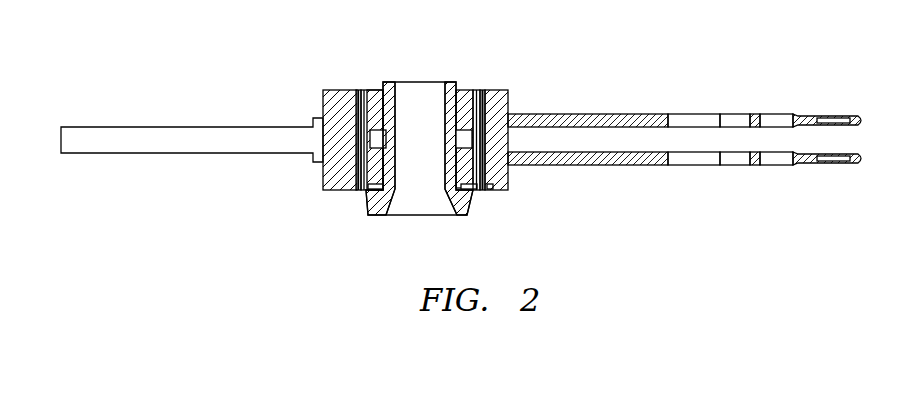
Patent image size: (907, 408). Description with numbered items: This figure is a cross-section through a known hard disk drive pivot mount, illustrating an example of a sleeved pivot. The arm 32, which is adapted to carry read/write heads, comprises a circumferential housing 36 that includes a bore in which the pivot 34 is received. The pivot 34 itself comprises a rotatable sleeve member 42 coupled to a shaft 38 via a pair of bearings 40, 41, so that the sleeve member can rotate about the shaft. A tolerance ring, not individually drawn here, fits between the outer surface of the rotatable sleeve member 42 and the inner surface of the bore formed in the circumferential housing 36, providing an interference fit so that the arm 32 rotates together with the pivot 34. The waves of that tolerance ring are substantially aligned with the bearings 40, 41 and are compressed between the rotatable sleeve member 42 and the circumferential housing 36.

The arm 32 is at (585, 115).
The pivot 34 is at (493, 56).
The circumferential housing 36 is at (495, 188).
The shaft 38 is at (465, 215).
The bearing 40 is at (361, 190).
The bearing 41 is at (378, 89).
The rotatable sleeve member 42 is at (357, 89).